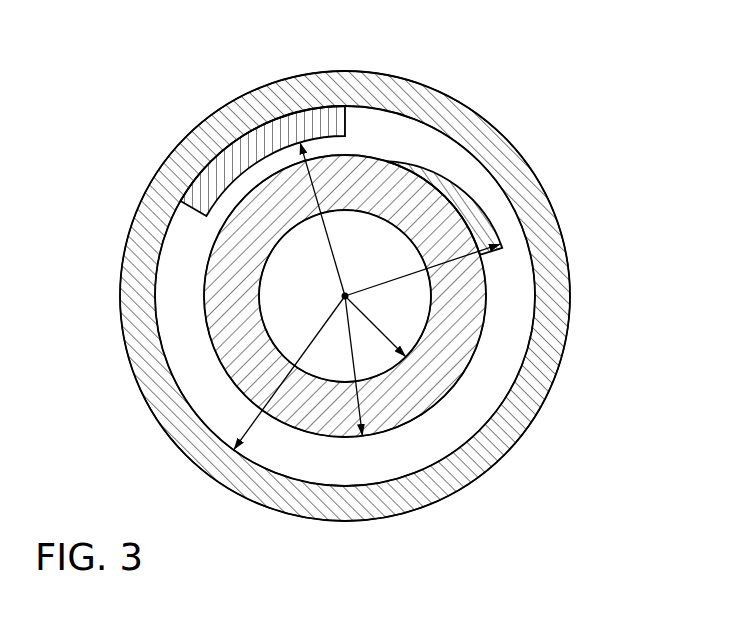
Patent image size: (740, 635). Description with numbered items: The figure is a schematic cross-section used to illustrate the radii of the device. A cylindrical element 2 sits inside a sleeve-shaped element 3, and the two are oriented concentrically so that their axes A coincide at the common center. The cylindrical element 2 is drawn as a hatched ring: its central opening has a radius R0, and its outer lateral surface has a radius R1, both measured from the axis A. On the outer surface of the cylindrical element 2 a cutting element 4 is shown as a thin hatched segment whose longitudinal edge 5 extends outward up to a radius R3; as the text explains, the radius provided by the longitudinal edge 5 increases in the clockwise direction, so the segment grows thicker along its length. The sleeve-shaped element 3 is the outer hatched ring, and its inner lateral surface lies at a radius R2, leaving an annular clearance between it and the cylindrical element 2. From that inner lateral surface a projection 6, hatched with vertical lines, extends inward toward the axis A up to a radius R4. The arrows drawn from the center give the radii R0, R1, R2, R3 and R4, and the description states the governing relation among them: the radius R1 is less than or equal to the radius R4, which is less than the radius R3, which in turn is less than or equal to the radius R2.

The cylindrical element 2 is at (226, 327).
The sleeve-shaped element 3 is at (153, 221).
The cutting element 4 is at (473, 210).
The longitudinal edge 5 is at (458, 178).
The projection 6 is at (313, 117).
The axis A is at (345, 296).
The radius of opening R0 is at (378, 325).
The radius of outer lateral surface R1 is at (353, 362).
The radius of inner lateral surface R2 is at (255, 422).
The radius of longitudinal edge R3 is at (398, 278).
The radius of projection R4 is at (332, 252).